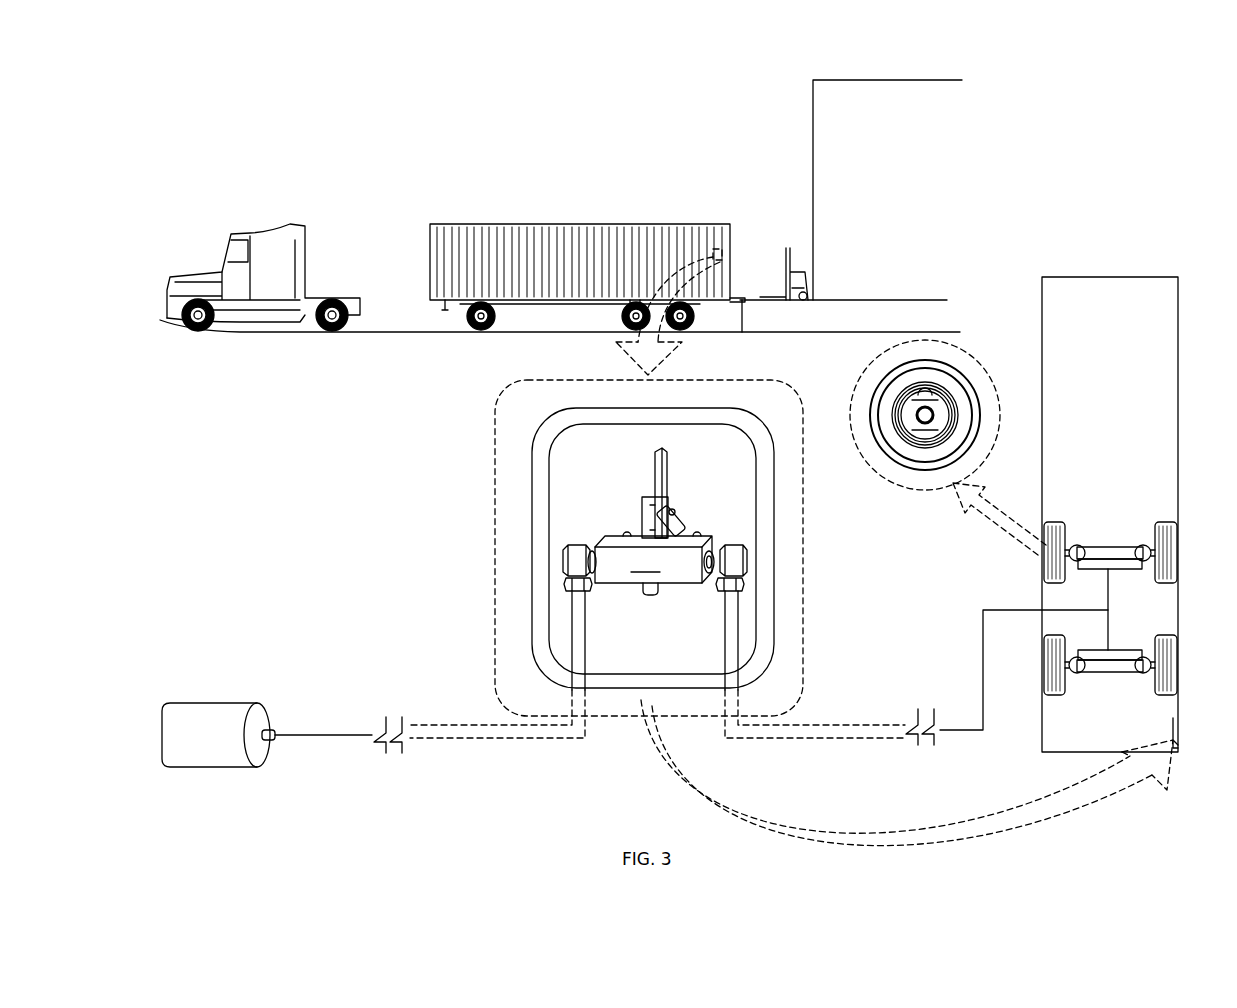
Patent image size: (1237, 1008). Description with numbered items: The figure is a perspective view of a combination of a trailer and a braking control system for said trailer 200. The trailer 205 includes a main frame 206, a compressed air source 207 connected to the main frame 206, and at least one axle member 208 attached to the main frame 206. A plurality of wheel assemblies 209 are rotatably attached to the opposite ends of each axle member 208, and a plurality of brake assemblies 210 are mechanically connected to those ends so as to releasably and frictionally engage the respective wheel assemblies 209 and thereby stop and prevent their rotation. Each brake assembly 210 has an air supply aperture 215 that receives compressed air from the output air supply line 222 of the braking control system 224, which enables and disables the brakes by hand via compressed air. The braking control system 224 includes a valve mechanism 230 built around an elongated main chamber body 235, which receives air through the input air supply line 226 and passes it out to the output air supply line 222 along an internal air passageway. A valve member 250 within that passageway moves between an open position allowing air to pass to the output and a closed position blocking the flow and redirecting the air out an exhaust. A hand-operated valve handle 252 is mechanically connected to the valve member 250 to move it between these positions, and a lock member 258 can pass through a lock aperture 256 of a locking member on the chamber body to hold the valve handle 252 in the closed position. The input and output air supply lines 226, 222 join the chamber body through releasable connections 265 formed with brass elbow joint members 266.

The combination of a trailer and a braking control system 200 is at (1065, 155).
The braking control system 224 is at (1088, 188).
The trailer 205 is at (592, 224).
The main frame 206 is at (538, 304).
The compressed air source 207 is at (215, 703).
The axle member 208 is at (1100, 548).
The wheel assembly 209 is at (872, 397).
The brake assembly 210 is at (957, 400).
The air supply aperture 215 is at (632, 538).
The output air supply line 222 is at (732, 615).
The input air supply line 226 is at (578, 615).
The valve mechanism 230 is at (683, 450).
The main chamber body 235 is at (592, 546).
The valve member 250 is at (700, 488).
The valve handle 252 is at (655, 468).
The lock aperture 256 is at (670, 497).
The lock member 258 is at (690, 515).
The releasable connection 265 is at (582, 591).
The elbow joint member 266 is at (572, 562).